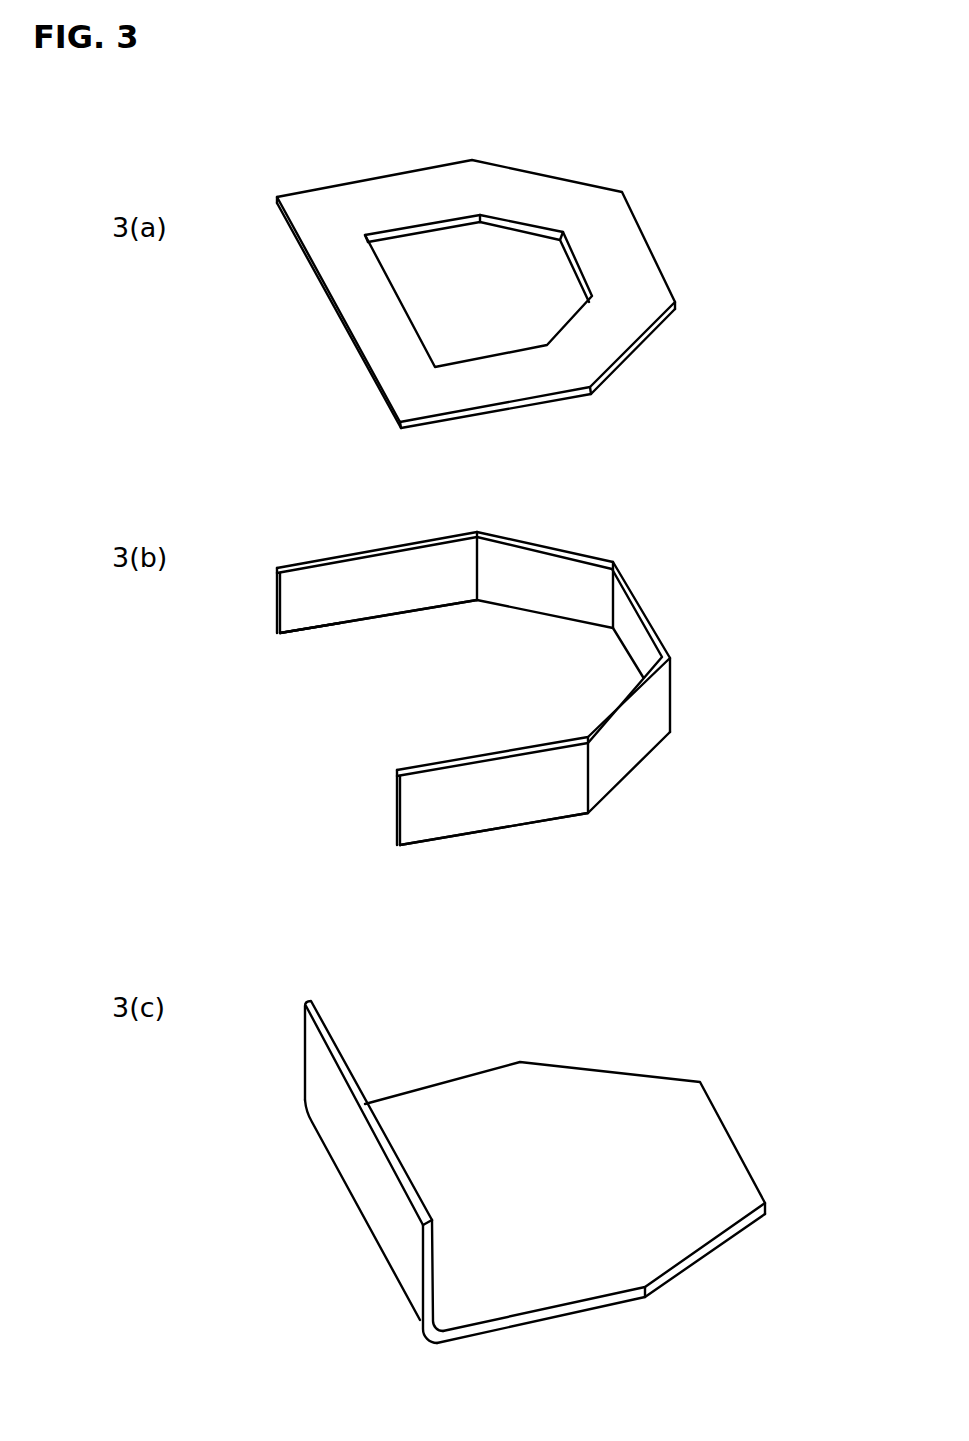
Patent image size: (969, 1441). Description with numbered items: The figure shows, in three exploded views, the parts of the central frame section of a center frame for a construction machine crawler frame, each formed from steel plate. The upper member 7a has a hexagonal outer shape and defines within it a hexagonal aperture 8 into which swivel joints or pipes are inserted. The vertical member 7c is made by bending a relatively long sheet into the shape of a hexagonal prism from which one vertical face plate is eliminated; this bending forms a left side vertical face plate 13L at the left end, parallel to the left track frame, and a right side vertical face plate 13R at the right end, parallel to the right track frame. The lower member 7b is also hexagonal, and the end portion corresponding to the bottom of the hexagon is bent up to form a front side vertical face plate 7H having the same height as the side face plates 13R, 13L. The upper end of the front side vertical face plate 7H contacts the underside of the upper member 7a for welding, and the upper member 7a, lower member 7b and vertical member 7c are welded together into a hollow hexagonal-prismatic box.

The upper member 7a is at (312, 272).
The hexagonal aperture 8 is at (448, 308).
The vertical member 7c is at (455, 688).
The right side vertical face plate 13R is at (290, 592).
The left side vertical face plate 13L is at (415, 806).
The front side vertical face plate 7H is at (358, 1178).
The lower member 7b is at (653, 1257).